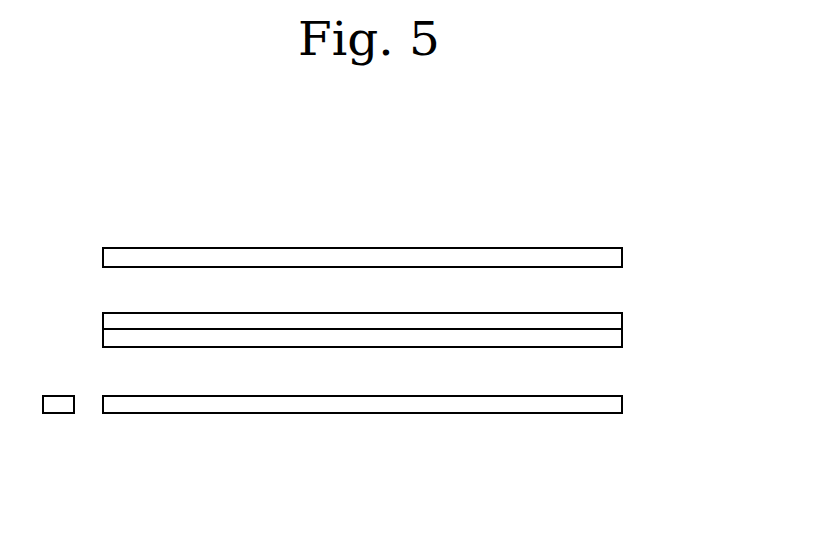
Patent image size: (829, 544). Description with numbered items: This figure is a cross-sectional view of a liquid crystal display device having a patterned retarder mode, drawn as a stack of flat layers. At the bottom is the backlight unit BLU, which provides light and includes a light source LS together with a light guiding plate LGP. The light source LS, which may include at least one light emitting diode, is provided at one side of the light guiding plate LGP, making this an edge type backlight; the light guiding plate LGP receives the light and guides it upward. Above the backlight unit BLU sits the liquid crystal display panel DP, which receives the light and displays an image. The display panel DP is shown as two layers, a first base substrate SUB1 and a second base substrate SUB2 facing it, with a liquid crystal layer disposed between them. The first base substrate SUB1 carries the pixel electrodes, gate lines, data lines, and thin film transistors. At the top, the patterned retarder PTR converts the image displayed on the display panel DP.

The patterned retarder PTR is at (608, 260).
The second base substrate SUB2 is at (608, 321).
The first base substrate SUB1 is at (608, 338).
The liquid crystal display panel DP is at (428, 330).
The light source LS is at (59, 413).
The light guiding plate LGP is at (362, 439).
The backlight unit BLU is at (332, 458).